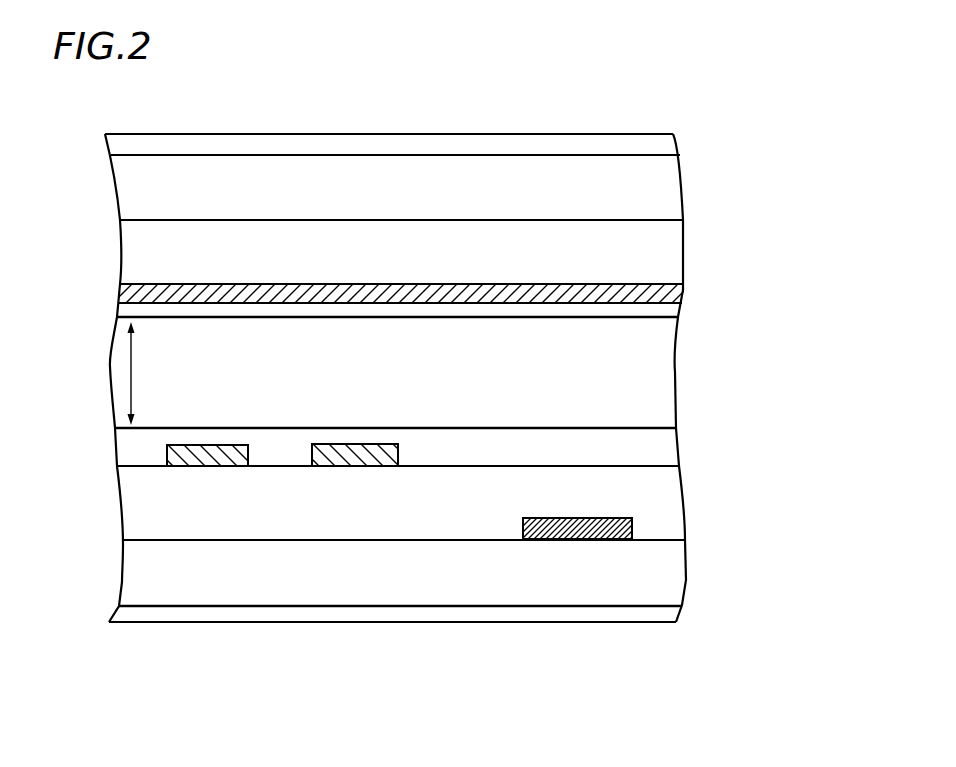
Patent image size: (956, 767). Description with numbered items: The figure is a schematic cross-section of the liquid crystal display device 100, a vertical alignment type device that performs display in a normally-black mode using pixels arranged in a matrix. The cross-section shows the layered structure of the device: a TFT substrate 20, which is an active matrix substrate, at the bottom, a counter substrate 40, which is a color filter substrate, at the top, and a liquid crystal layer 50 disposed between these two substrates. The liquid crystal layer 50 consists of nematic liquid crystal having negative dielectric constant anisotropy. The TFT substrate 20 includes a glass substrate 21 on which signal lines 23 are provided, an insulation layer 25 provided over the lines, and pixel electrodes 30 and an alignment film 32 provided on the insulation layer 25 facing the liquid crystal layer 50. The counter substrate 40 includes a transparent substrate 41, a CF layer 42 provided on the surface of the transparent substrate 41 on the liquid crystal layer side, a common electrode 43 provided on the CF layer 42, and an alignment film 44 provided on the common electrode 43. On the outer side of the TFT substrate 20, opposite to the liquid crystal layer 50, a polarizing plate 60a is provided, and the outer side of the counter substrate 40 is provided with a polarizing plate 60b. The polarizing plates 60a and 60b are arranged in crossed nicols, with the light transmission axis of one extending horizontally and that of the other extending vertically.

The liquid crystal display device 100 is at (497, 105).
The polarizing plate 60b is at (662, 139).
The polarizing plate 60a is at (665, 615).
The counter substrate 40 is at (745, 152).
The transparent substrate 41 is at (682, 163).
The CF layer 42 is at (683, 248).
The common electrode 43 is at (683, 290).
The alignment film 44 is at (680, 308).
The liquid crystal layer 50 is at (675, 372).
The TFT substrate 20 is at (747, 428).
The alignment film 32 is at (677, 443).
The pixel electrodes 30 is at (203, 443).
The insulation layer 25 is at (680, 498).
The glass substrate 21 is at (686, 550).
The signal lines 23 is at (563, 542).